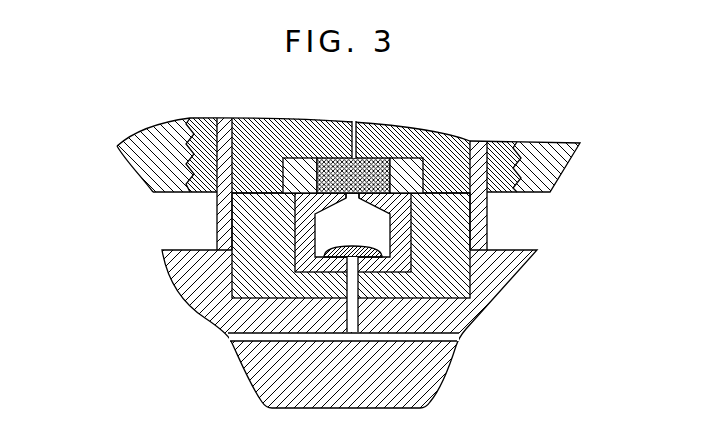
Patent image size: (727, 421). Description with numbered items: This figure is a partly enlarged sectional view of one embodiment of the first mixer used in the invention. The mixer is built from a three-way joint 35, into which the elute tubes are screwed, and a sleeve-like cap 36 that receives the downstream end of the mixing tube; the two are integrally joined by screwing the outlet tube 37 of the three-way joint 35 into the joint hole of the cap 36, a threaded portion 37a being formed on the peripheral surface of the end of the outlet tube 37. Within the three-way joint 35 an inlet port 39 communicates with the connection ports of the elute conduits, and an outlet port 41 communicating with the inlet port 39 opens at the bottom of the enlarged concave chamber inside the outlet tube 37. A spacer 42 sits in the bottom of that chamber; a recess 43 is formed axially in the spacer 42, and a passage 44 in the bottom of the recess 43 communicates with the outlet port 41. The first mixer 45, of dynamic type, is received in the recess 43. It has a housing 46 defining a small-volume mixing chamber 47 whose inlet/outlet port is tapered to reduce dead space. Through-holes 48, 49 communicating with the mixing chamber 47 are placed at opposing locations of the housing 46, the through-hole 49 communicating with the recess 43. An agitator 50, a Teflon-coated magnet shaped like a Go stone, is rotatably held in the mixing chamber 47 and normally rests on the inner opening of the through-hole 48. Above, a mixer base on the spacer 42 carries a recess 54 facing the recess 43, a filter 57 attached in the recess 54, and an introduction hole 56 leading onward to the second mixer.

The three-way joint 35 is at (172, 262).
The sleeve-like cap 36 is at (578, 146).
The outlet tube 37 is at (227, 119).
The threaded portion 37a is at (527, 152).
The inlet port 39 is at (233, 342).
The outlet port 41 is at (352, 322).
The spacer 42 is at (490, 205).
The recess 43 is at (404, 202).
The passage 44 is at (358, 283).
The first mixer 45 is at (322, 202).
The housing 46 is at (400, 212).
The mixing chamber 47 is at (353, 224).
The through-hole 48 is at (360, 266).
The through-hole 49 is at (372, 122).
The agitator 50 is at (347, 284).
The recess 54 is at (278, 124).
The introduction hole 56 is at (318, 122).
The filter 57 is at (352, 202).